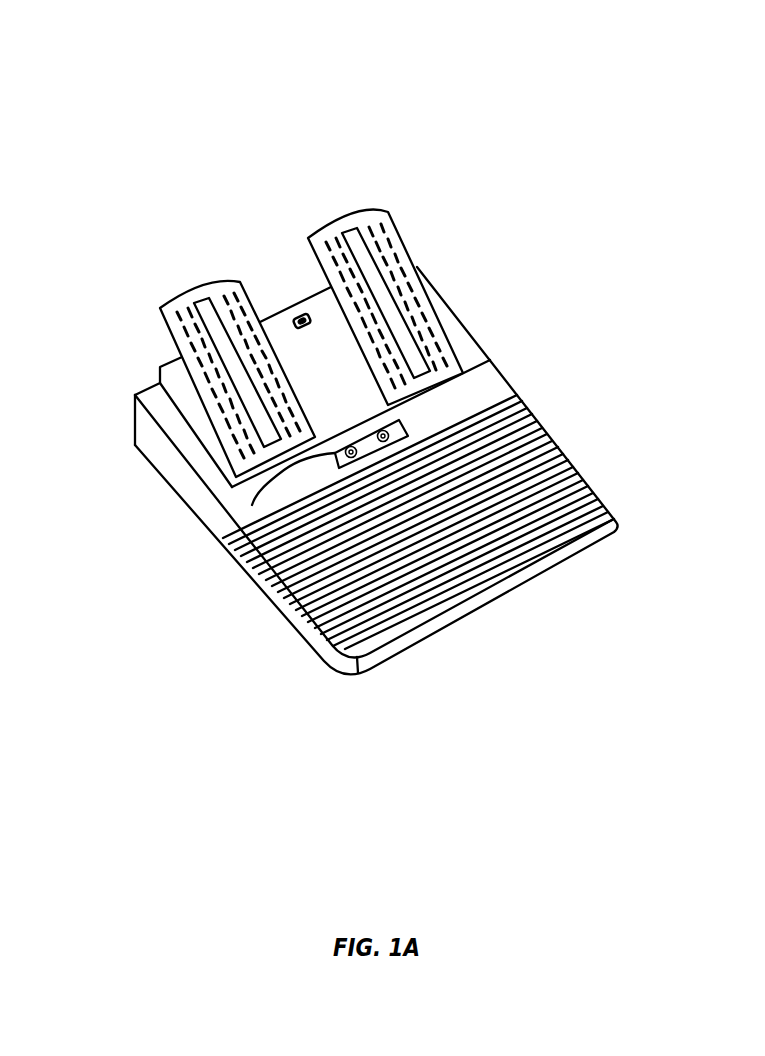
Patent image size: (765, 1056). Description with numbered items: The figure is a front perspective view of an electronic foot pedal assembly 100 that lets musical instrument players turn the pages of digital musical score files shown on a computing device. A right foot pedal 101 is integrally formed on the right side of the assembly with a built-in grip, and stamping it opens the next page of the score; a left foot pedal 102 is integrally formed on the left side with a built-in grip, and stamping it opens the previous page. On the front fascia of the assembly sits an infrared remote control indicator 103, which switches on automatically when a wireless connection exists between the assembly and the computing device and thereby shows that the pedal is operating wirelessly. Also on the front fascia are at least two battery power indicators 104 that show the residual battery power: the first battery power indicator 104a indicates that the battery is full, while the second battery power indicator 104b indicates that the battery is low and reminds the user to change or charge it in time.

The electronic foot pedal assembly 100 is at (550, 91).
The right foot pedal 101 is at (400, 235).
The left foot pedal 102 is at (158, 323).
The infrared remote control indicator 103 is at (302, 318).
The battery power indicators 104 is at (407, 431).
The first battery power indicator 104a is at (252, 505).
The second battery power indicator 104b is at (383, 443).